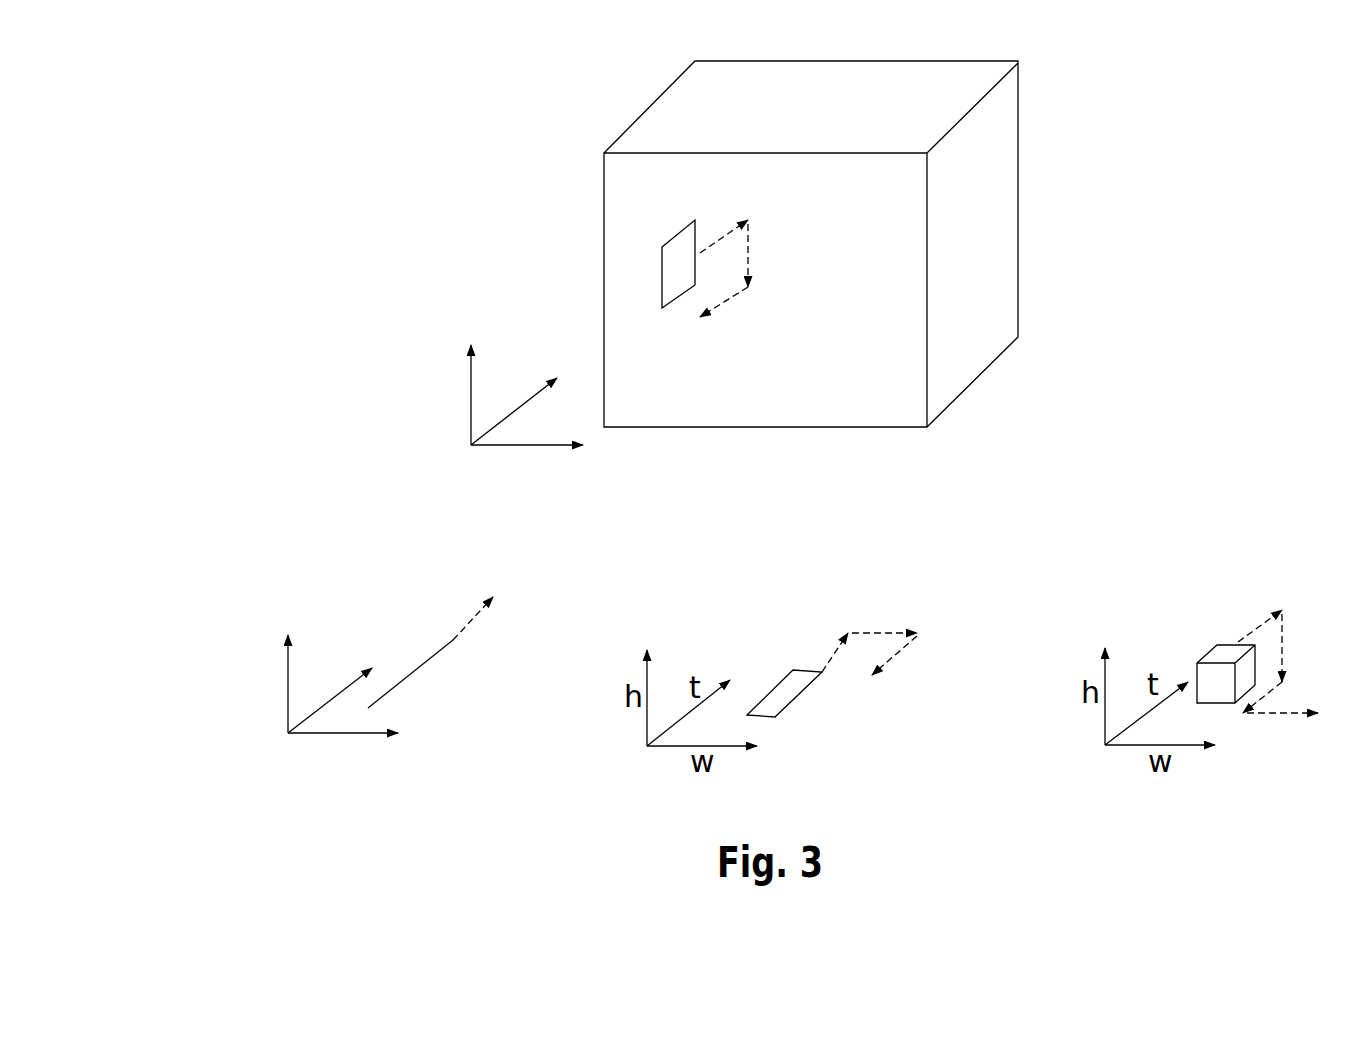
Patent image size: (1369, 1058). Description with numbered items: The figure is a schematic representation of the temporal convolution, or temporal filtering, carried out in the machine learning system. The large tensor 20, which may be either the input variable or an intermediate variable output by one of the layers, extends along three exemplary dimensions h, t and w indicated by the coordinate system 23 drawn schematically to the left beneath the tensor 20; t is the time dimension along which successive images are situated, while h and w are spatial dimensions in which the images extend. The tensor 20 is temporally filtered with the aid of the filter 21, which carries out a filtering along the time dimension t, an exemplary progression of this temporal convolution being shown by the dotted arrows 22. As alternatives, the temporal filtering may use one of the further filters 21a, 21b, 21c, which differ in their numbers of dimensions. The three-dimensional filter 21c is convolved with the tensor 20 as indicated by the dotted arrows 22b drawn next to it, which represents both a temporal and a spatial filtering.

The tensor 20 is at (647, 108).
The filter 21 is at (663, 277).
The dotted arrows 22 is at (745, 252).
The coordinate system 23 is at (437, 357).
The further filter 21a is at (437, 648).
The further filter 21b is at (793, 670).
The three-dimensional filter 21c is at (1217, 643).
The dotted arrows 22b is at (1263, 620).